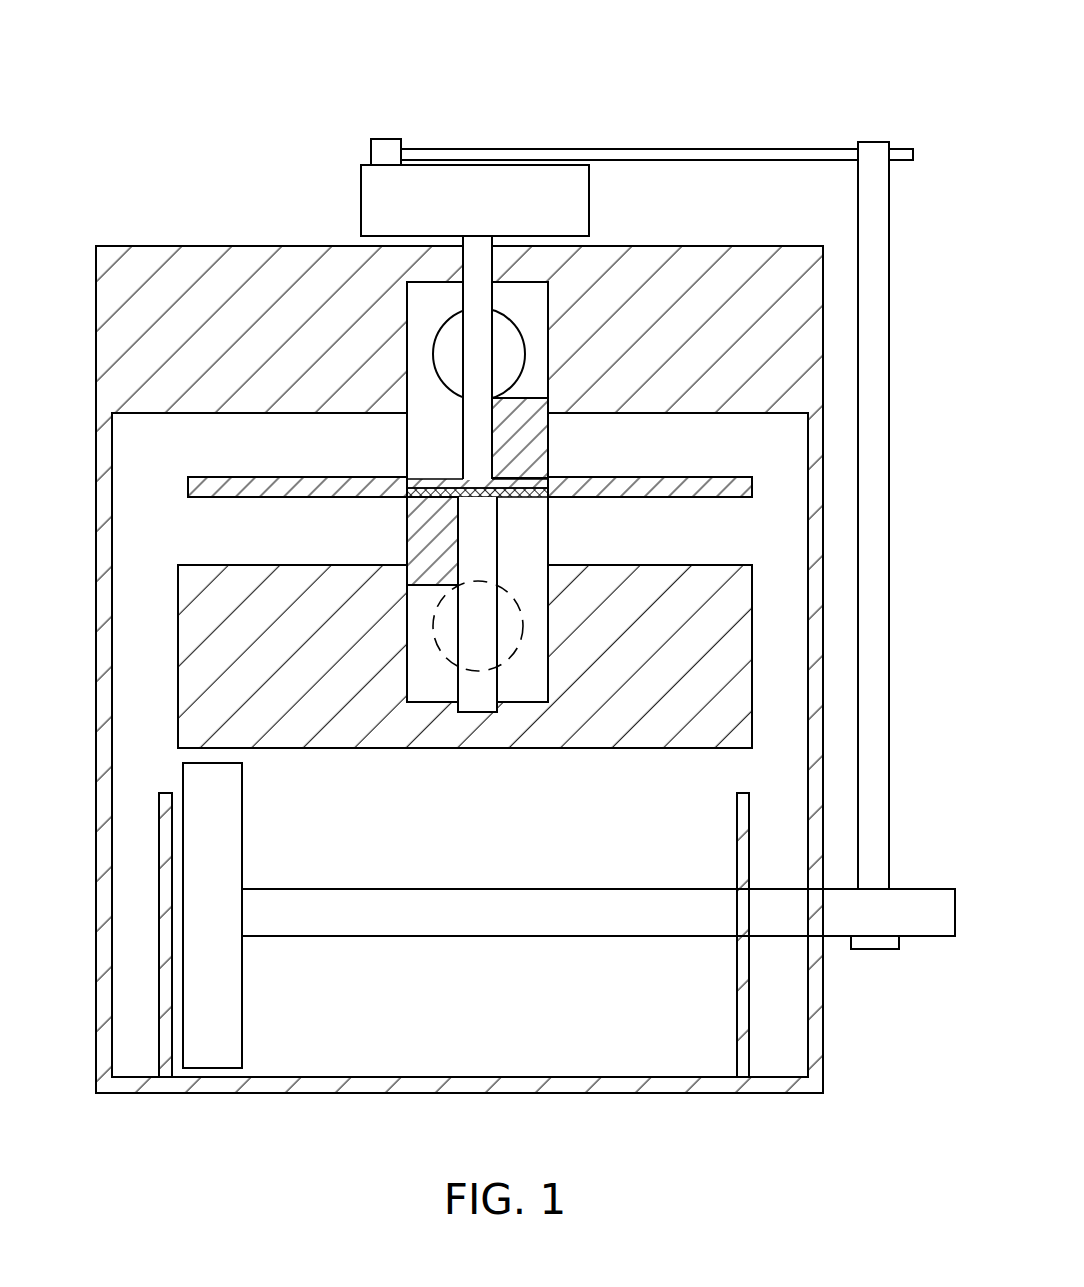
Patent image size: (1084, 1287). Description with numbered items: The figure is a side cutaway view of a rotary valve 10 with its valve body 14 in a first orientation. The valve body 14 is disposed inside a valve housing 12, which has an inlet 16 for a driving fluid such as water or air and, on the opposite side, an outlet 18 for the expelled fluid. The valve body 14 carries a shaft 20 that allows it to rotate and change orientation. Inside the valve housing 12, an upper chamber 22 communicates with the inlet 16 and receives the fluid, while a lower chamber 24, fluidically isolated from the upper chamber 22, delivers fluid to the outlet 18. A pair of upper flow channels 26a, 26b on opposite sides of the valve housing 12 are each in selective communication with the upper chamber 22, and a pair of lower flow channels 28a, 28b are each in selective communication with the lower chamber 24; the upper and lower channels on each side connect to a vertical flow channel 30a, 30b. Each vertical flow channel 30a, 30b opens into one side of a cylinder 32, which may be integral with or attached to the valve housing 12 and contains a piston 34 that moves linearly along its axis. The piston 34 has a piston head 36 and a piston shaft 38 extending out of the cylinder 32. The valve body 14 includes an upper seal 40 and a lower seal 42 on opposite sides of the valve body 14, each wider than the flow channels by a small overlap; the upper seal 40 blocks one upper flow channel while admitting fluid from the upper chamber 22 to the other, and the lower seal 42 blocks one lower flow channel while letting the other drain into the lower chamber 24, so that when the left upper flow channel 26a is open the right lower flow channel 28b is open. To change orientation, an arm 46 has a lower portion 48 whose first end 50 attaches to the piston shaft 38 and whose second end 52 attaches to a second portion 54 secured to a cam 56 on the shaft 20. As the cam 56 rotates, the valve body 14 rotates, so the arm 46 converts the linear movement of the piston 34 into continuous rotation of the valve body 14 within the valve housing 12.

The rotary valve 10 is at (733, 77).
The valve housing 12 is at (131, 262).
The valve body 14 is at (432, 452).
The inlet 16 is at (447, 342).
The outlet 18 is at (523, 640).
The shaft 20 is at (478, 282).
The upper chamber 22 is at (540, 312).
The lower chamber 24 is at (540, 616).
The upper flow channel 26a is at (263, 428).
The upper flow channel 26b is at (723, 443).
The lower flow channel 28a is at (265, 545).
The lower flow channel 28b is at (693, 545).
The vertical flow channel 30a is at (132, 509).
The vertical flow channel 30b is at (787, 557).
The cylinder 32 is at (785, 1120).
The piston 34 is at (437, 957).
The piston head 36 is at (213, 1048).
The piston shaft 38 is at (528, 920).
The upper seal 40 is at (530, 447).
The lower seal 42 is at (422, 525).
The arm 46 is at (907, 242).
The lower portion 48 is at (880, 725).
The first end 50 is at (873, 948).
The second end 52 is at (873, 148).
The second portion 54 is at (795, 148).
The cam 56 is at (472, 185).